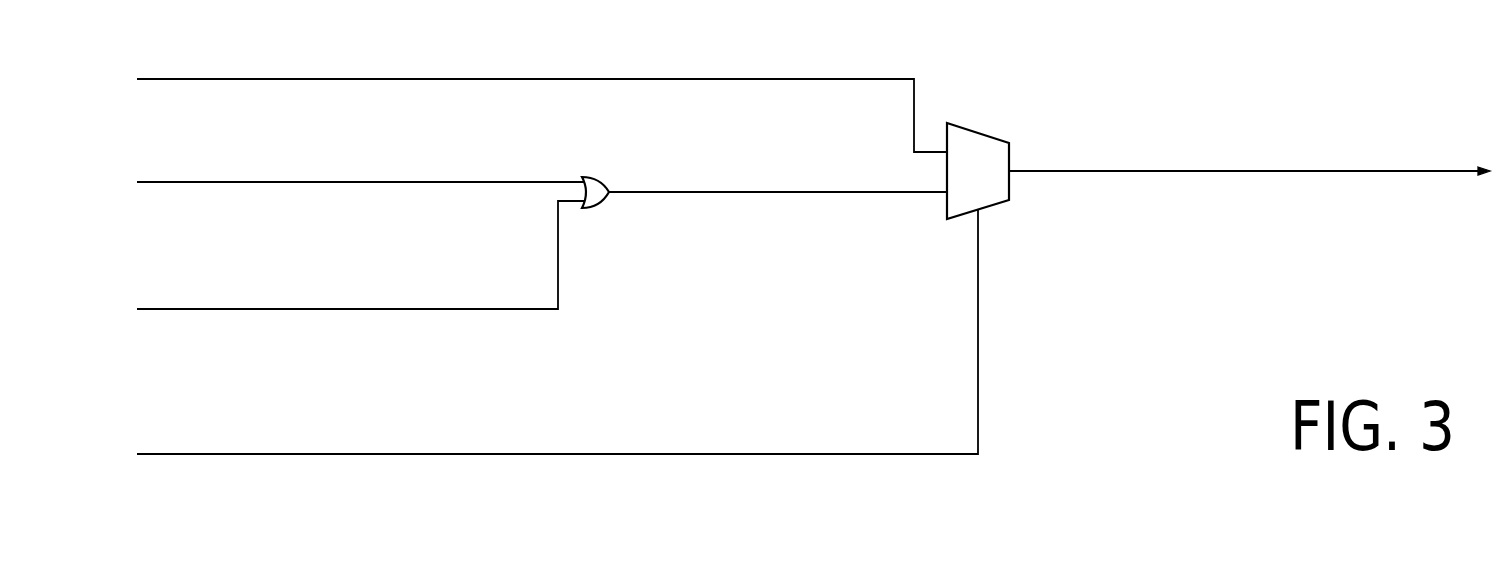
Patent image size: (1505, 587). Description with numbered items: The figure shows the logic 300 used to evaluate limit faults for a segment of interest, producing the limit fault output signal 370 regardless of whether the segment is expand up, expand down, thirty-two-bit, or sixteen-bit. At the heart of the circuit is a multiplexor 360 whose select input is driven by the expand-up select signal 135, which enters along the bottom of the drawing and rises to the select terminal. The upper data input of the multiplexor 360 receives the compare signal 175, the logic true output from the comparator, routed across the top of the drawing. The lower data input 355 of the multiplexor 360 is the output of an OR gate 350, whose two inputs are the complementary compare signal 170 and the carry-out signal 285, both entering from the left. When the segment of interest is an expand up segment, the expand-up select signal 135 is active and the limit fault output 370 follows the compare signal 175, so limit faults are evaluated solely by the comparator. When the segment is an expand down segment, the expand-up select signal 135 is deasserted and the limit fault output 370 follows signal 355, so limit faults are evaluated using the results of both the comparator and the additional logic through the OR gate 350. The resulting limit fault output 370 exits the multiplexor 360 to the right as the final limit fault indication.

The logic 300 is at (1141, 401).
The COMPARE_1 signal 175 is at (521, 79).
The COMPARE_1* signal 170 is at (312, 182).
The CARRY_OUT_31_1 signal 285 is at (370, 309).
The EXPAND_UP_1 signal 135 is at (535, 454).
The OR gate 350 is at (602, 204).
The lower input signal 355 is at (760, 192).
The multiplexor 360 is at (1003, 203).
The LIMIT_FAULT_1 signal 370 is at (1208, 171).